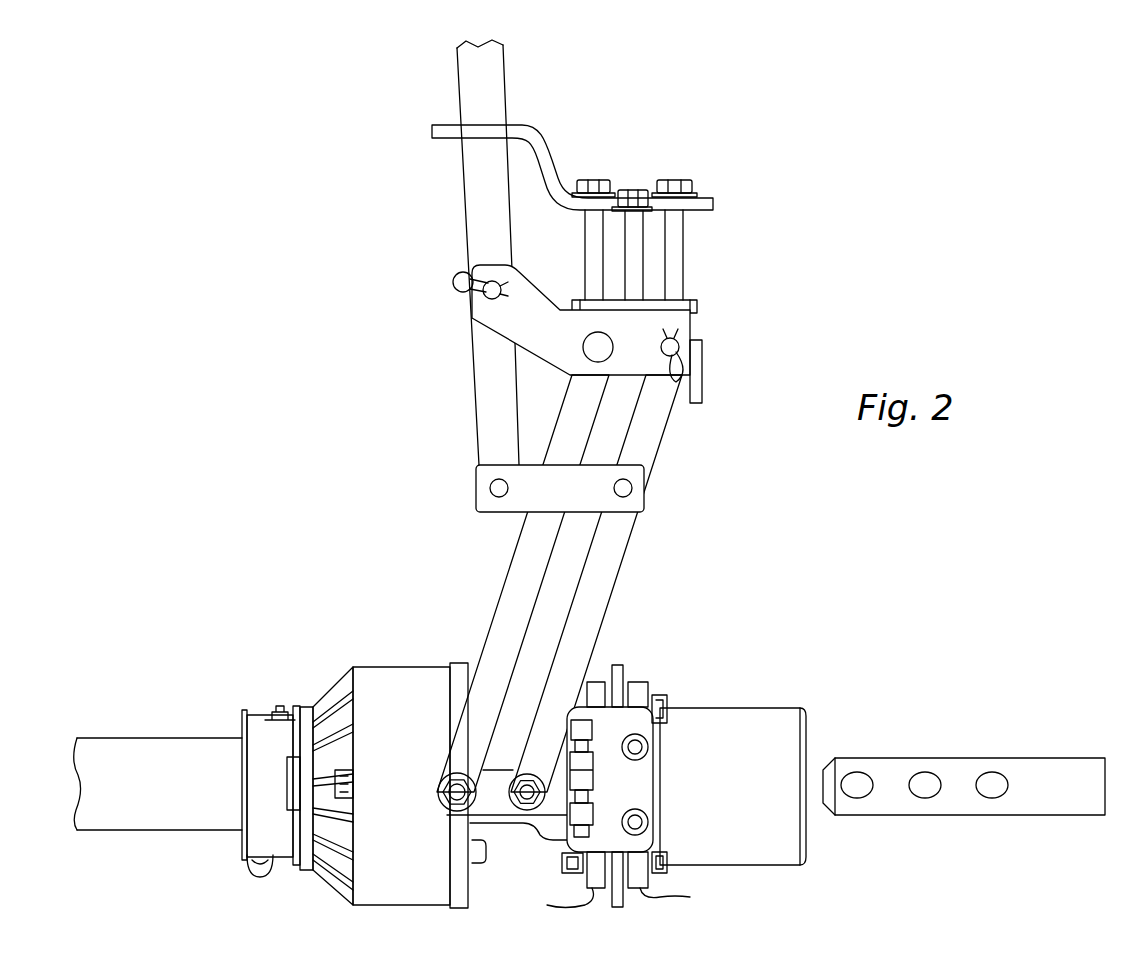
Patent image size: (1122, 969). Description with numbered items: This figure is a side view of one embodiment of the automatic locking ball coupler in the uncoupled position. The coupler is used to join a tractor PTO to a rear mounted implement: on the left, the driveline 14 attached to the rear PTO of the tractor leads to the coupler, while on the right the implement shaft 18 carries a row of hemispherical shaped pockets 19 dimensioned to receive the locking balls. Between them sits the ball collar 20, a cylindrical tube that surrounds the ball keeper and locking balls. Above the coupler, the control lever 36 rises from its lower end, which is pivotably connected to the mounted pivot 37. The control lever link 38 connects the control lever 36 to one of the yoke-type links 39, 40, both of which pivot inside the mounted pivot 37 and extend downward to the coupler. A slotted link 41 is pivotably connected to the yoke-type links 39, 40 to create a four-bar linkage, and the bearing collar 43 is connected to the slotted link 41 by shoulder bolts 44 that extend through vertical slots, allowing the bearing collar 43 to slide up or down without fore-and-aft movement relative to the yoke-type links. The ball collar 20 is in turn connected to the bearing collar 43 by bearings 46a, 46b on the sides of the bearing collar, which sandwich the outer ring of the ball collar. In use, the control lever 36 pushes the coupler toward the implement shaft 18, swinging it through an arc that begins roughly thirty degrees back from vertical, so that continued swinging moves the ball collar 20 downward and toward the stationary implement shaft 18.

The driveline 14 is at (157, 750).
The implement shaft 18 is at (887, 762).
The hemispherical shaped pockets 19 is at (992, 792).
The ball collar 20 is at (750, 718).
The control lever 36 is at (497, 75).
The mounted pivot 37 is at (528, 290).
The control lever link 38 is at (640, 495).
The yoke-type link 39 is at (613, 564).
The yoke-type link 40 is at (507, 592).
The slotted link 41 is at (643, 770).
The bearing collar 43 is at (618, 907).
The shoulder bolts 44 is at (587, 813).
The bearing 46a is at (546, 902).
The bearing 46b is at (691, 897).